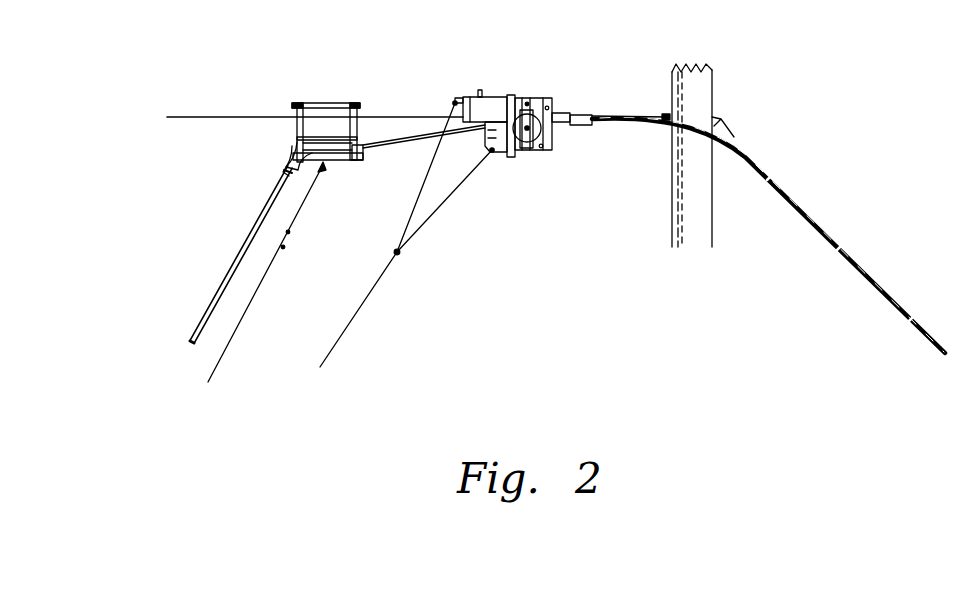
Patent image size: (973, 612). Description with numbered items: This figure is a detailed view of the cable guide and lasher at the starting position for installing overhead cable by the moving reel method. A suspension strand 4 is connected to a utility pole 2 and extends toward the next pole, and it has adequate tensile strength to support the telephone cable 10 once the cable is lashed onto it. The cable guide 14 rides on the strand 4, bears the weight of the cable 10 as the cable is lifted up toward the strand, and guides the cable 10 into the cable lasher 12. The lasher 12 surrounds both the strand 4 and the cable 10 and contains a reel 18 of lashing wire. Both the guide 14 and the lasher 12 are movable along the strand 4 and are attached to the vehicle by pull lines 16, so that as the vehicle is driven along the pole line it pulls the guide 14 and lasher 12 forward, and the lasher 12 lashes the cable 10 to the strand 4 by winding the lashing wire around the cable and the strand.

The utility pole 2 is at (707, 87).
The suspension strand 4 is at (222, 117).
The telephone cable 10 is at (228, 275).
The cable lasher 12 is at (497, 90).
The cable guide 14 is at (330, 105).
The pull lines 16 is at (333, 347).
The reel of lashing wire 18 is at (513, 152).